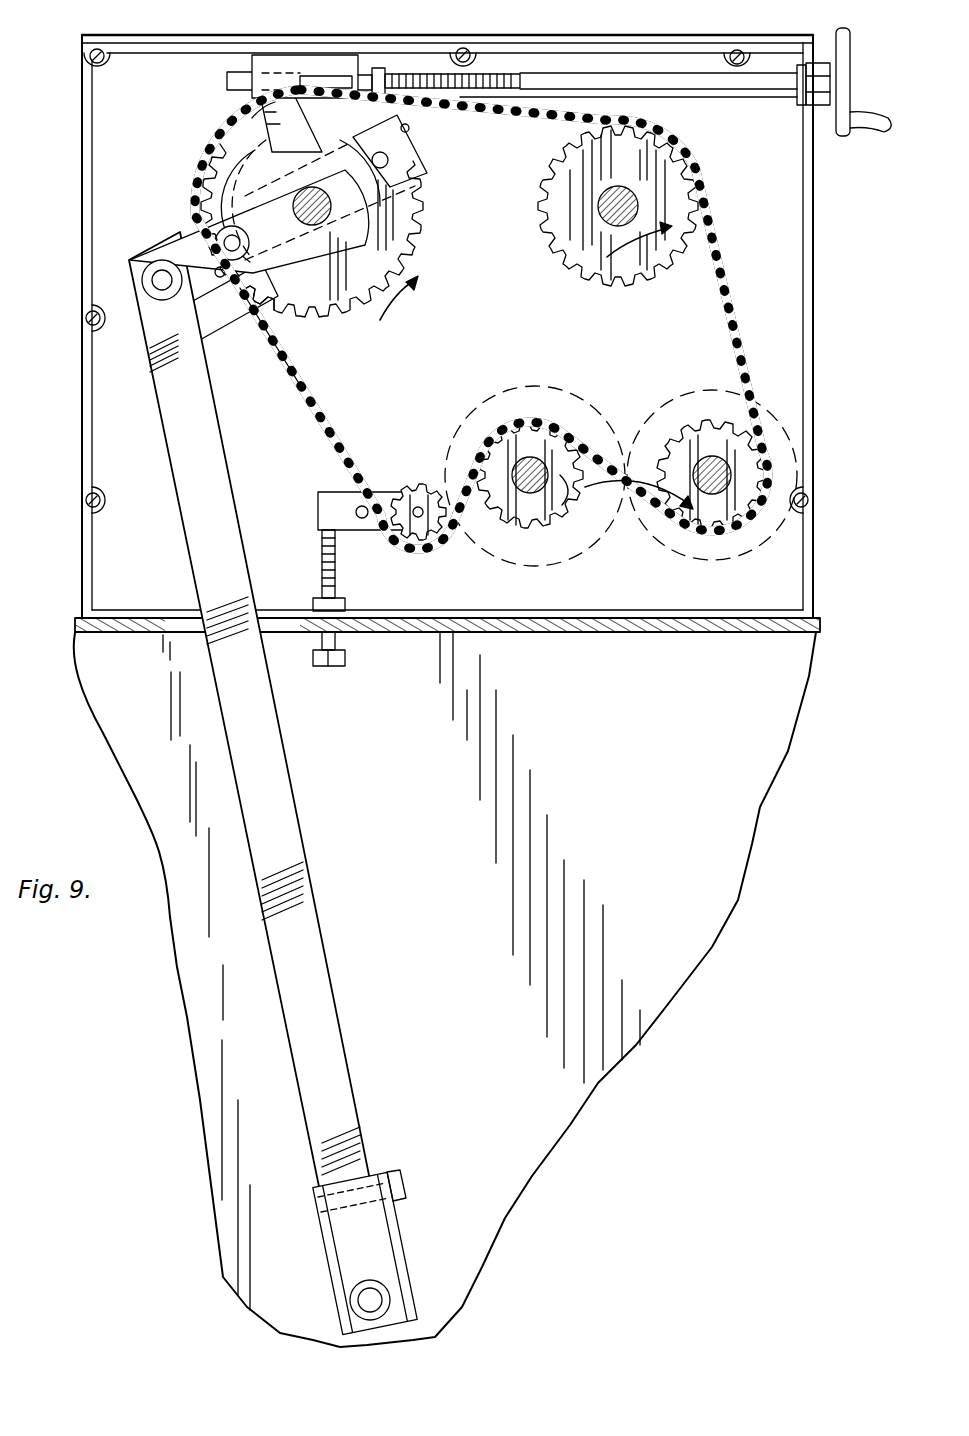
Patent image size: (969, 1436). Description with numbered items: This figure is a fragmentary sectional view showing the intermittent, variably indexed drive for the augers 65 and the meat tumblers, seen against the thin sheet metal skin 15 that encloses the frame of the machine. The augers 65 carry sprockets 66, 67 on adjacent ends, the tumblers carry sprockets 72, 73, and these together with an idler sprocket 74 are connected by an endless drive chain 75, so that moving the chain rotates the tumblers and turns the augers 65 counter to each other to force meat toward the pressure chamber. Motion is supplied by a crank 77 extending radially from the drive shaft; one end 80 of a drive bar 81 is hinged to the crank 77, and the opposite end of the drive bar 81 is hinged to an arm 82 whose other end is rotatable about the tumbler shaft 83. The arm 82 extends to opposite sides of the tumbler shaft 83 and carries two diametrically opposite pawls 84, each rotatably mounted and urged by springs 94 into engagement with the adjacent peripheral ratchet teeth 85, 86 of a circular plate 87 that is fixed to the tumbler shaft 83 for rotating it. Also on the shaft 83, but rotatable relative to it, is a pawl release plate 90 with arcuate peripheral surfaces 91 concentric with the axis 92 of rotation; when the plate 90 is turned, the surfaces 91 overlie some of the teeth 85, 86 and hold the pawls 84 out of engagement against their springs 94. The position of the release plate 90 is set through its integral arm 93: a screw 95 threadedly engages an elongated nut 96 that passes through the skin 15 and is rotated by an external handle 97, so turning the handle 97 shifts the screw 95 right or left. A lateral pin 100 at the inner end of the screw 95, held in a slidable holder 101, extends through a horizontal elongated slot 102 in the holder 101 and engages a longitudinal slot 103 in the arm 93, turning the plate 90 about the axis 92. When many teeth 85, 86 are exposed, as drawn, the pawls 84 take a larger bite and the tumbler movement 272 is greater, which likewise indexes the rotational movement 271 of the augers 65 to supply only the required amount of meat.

The sheet metal skin 15 is at (815, 238).
The augers 65 is at (662, 392).
The sprocket 66 is at (715, 540).
The sprocket 67 is at (500, 540).
The sprocket 72 is at (680, 178).
The sprocket 73 is at (405, 258).
The idler sprocket 74 is at (414, 542).
The endless drive chain 75 is at (322, 405).
The crank 77 is at (395, 1240).
The end of drive bar 80 is at (342, 1280).
The drive bar 81 is at (275, 770).
The arm 82 is at (184, 250).
The tumbler shaft 83 is at (325, 198).
The pawls 84 is at (398, 122).
The ratchet teeth 85 is at (338, 112).
The ratchet teeth 86 is at (290, 302).
The circular plate 87 is at (240, 152).
The pawl release plate 90 is at (380, 226).
The arcuate peripheral surfaces 91 is at (240, 190).
The axis of rotation 92 is at (298, 207).
The arm 93 is at (255, 110).
The springs 94 is at (392, 152).
The screw 95 is at (420, 76).
The elongated nut 96 is at (535, 78).
The handle 97 is at (847, 50).
The lateral pin 100 is at (268, 74).
The slidable holder 101 is at (292, 62).
The elongated slot 102 is at (330, 76).
The longitudinal slot 103 is at (258, 90).
The distance of rotational movement 271 is at (640, 505).
The direction of movement 272 is at (650, 265).